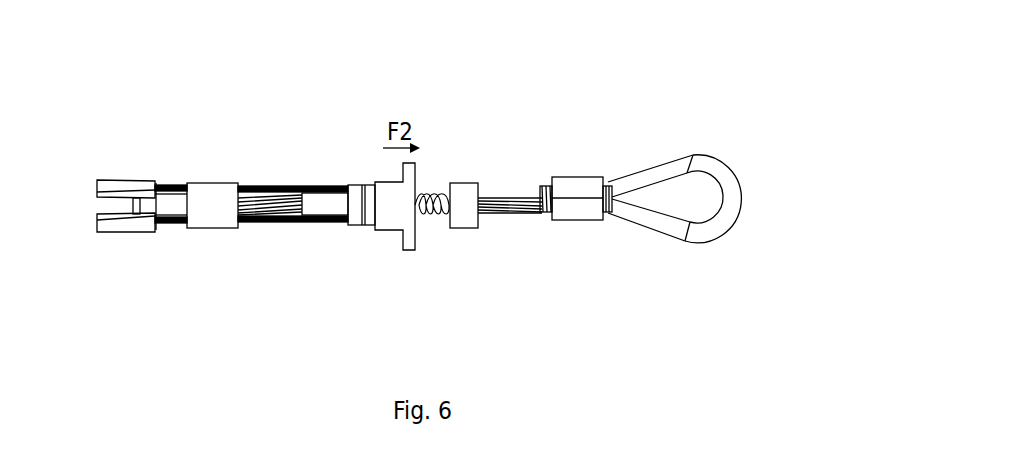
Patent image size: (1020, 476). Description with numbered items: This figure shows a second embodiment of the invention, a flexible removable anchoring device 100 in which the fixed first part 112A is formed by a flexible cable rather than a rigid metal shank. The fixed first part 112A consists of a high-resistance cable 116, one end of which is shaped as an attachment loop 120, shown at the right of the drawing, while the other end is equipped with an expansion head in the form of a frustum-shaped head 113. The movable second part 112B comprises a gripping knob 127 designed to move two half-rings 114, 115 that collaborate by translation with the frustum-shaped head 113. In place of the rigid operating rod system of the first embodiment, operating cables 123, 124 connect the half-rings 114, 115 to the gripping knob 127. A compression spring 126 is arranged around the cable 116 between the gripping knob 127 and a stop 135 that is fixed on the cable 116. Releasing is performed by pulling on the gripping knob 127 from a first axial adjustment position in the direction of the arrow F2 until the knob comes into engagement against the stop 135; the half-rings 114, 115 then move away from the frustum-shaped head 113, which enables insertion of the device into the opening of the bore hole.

The flexible removable anchoring device 100 is at (566, 122).
The fixed first part 112A is at (521, 240).
The movable second part 112B is at (371, 161).
The frustum-shaped head 113 is at (170, 208).
The half-ring 114 is at (123, 186).
The half-ring 115 is at (120, 227).
The high-resistance cable 116 is at (262, 200).
The attachment loop 120 is at (698, 237).
The operating cable 123 is at (280, 194).
The operating cable 124 is at (283, 222).
The compression spring 126 is at (430, 216).
The gripping knob 127 is at (388, 213).
The stop 135 is at (462, 218).